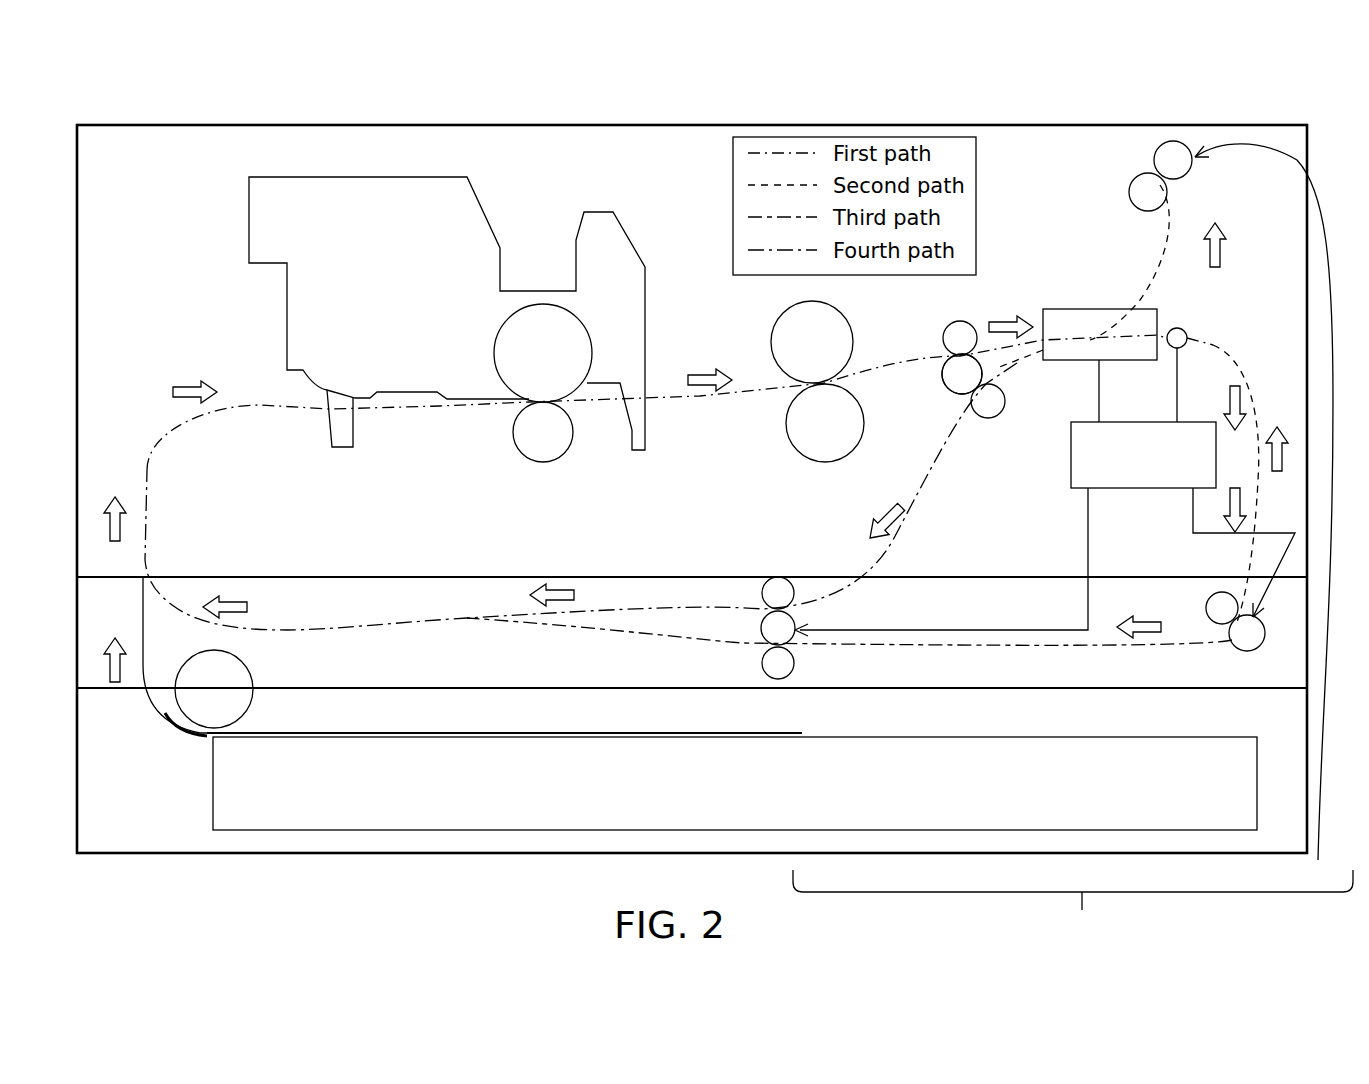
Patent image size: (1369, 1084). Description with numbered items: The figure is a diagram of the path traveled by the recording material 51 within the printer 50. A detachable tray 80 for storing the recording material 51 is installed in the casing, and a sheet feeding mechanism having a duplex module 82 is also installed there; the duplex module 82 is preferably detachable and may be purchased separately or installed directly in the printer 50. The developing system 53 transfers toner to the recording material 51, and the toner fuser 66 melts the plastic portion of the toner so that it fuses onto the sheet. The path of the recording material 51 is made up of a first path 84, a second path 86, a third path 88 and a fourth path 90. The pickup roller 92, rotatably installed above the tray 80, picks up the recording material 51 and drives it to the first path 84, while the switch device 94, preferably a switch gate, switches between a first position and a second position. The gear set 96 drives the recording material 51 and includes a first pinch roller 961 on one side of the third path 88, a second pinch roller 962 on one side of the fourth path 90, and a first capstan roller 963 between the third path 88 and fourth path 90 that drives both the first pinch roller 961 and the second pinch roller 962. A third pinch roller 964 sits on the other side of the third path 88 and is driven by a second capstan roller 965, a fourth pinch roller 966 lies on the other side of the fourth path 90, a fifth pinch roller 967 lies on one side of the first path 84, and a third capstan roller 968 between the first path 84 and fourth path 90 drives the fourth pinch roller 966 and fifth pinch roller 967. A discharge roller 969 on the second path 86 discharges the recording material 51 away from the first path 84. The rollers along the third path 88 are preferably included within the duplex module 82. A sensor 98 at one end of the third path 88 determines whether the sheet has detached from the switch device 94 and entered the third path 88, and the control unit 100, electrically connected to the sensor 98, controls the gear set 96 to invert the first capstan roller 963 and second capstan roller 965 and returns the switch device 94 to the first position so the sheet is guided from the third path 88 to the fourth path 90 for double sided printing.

The printer 50 is at (1208, 115).
The recording material 51 is at (177, 730).
The developing system 53 is at (600, 195).
The toner fuser 66 is at (840, 305).
The detachable tray 80 is at (688, 785).
The duplex module 82 is at (120, 615).
The first path 84 is at (250, 405).
The second path 86 is at (1177, 207).
The third path 88 is at (1213, 345).
The fourth path 90 is at (993, 372).
The pickup roller 92 is at (230, 678).
The switch device 94 is at (1070, 310).
The gear set 96 is at (1073, 908).
The sensor 98 is at (1180, 330).
The control unit 100 is at (1143, 488).
The first pinch roller 961 is at (790, 673).
The second pinch roller 962 is at (783, 590).
The first capstan roller 963 is at (790, 633).
The third pinch roller 964 is at (1222, 612).
The second capstan roller 965 is at (1247, 637).
The fourth pinch roller 966 is at (990, 405).
The fifth pinch roller 967 is at (953, 340).
The third capstan roller 968 is at (957, 380).
The discharge roller 969 is at (1268, 515).